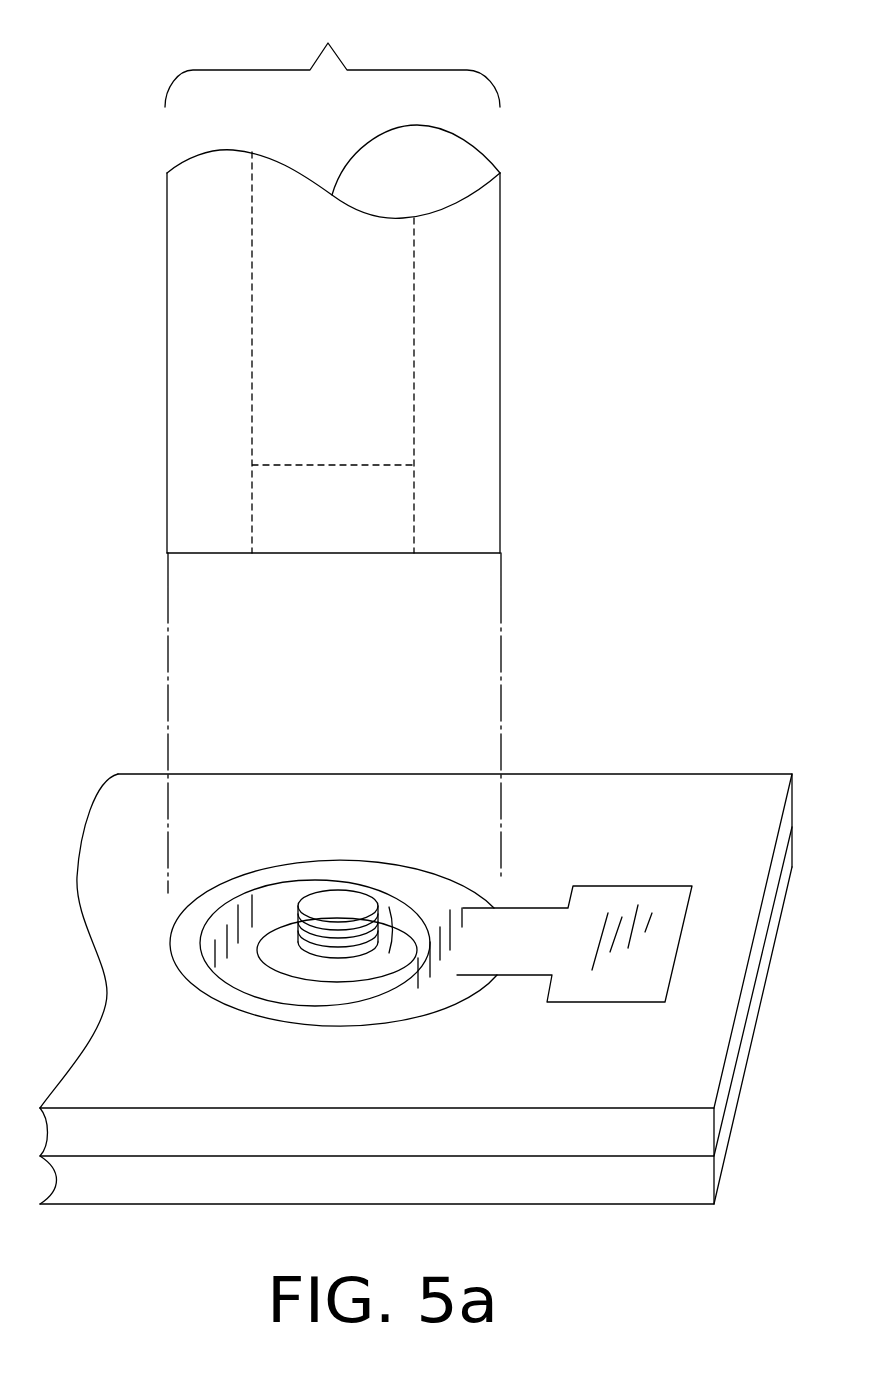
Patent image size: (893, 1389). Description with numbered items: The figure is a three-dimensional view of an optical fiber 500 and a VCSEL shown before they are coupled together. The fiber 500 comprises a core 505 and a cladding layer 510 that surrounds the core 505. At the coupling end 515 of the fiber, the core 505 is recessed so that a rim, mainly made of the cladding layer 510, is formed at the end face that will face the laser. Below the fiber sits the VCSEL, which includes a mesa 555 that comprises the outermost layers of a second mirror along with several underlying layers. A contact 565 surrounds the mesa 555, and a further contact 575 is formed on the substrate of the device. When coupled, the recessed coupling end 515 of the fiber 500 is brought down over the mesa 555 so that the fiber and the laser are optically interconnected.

The transponder assembly 500 is at (332, 54).
The inner core component 505 is at (350, 342).
The cylindrical housing 510 is at (483, 408).
The mounting plane 515 is at (466, 553).
The ferrite core stack 555 is at (393, 930).
The conductive coil and contact pad 565 is at (537, 950).
The substrate board 575 is at (683, 1190).